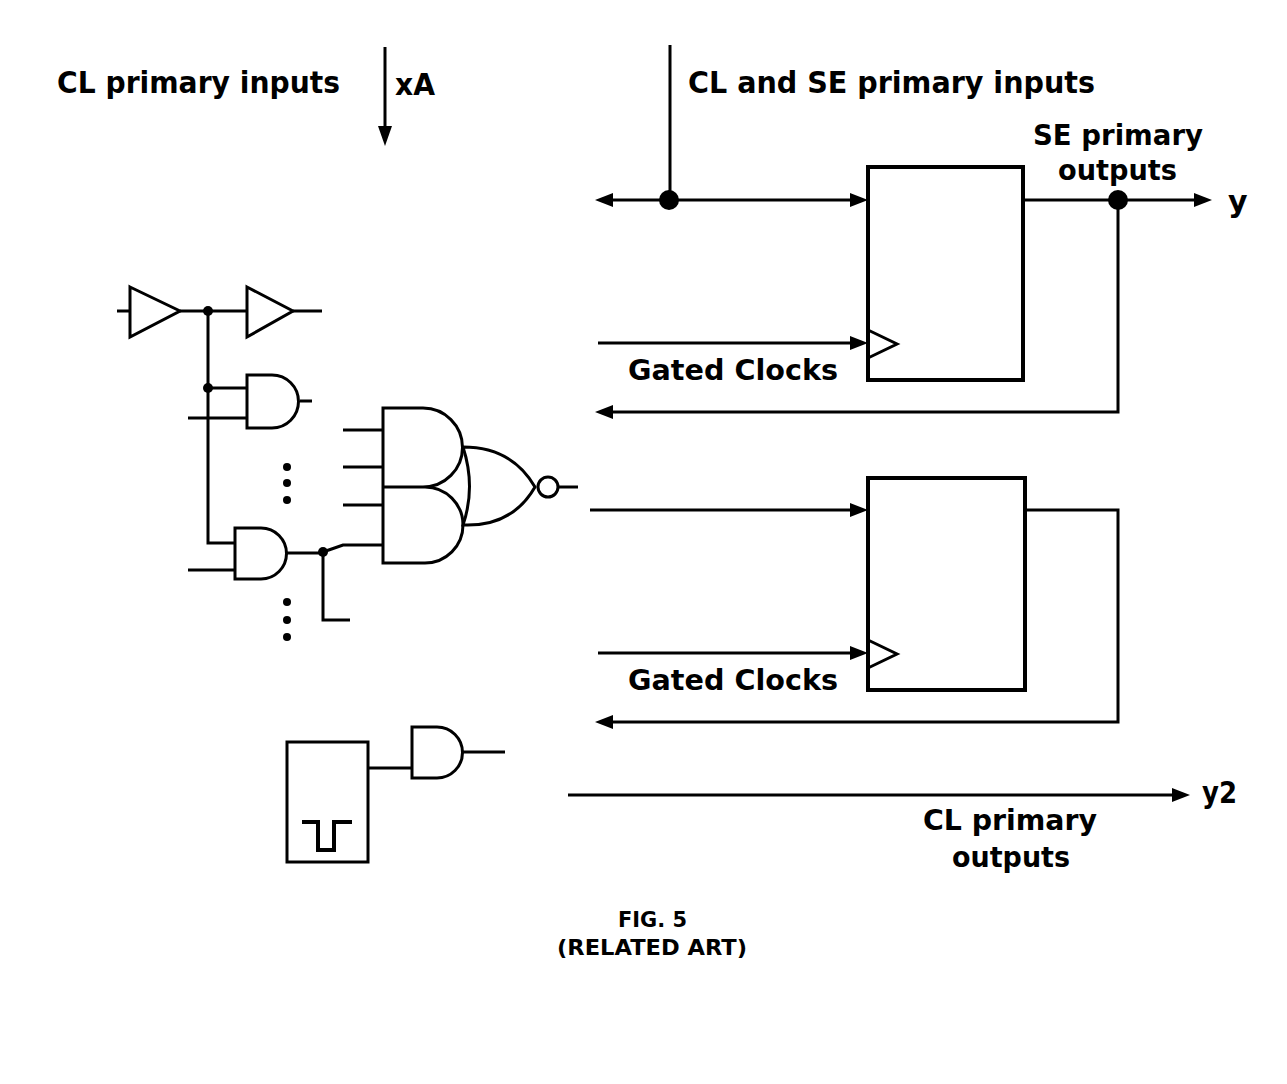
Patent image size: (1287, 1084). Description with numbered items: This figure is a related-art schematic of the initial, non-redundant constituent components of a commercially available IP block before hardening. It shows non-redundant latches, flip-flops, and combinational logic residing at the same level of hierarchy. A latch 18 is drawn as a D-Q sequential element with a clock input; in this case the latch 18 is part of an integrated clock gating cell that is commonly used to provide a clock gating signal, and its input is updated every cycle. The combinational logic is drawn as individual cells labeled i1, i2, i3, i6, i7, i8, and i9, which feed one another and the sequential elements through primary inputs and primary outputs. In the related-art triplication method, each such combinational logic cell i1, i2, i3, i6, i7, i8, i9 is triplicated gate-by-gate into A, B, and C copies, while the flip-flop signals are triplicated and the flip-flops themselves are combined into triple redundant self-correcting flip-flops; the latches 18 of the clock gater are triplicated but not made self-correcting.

The latch 18 is at (946, 428).
The buffer i1 is at (155, 295).
The buffer i2 is at (270, 295).
The AND gate i3 is at (265, 420).
The AND gate i6 is at (259, 572).
The AND-OR-invert gate i7 is at (480, 507).
The flip-flop i8 is at (349, 783).
The AND gate i9 is at (458, 733).